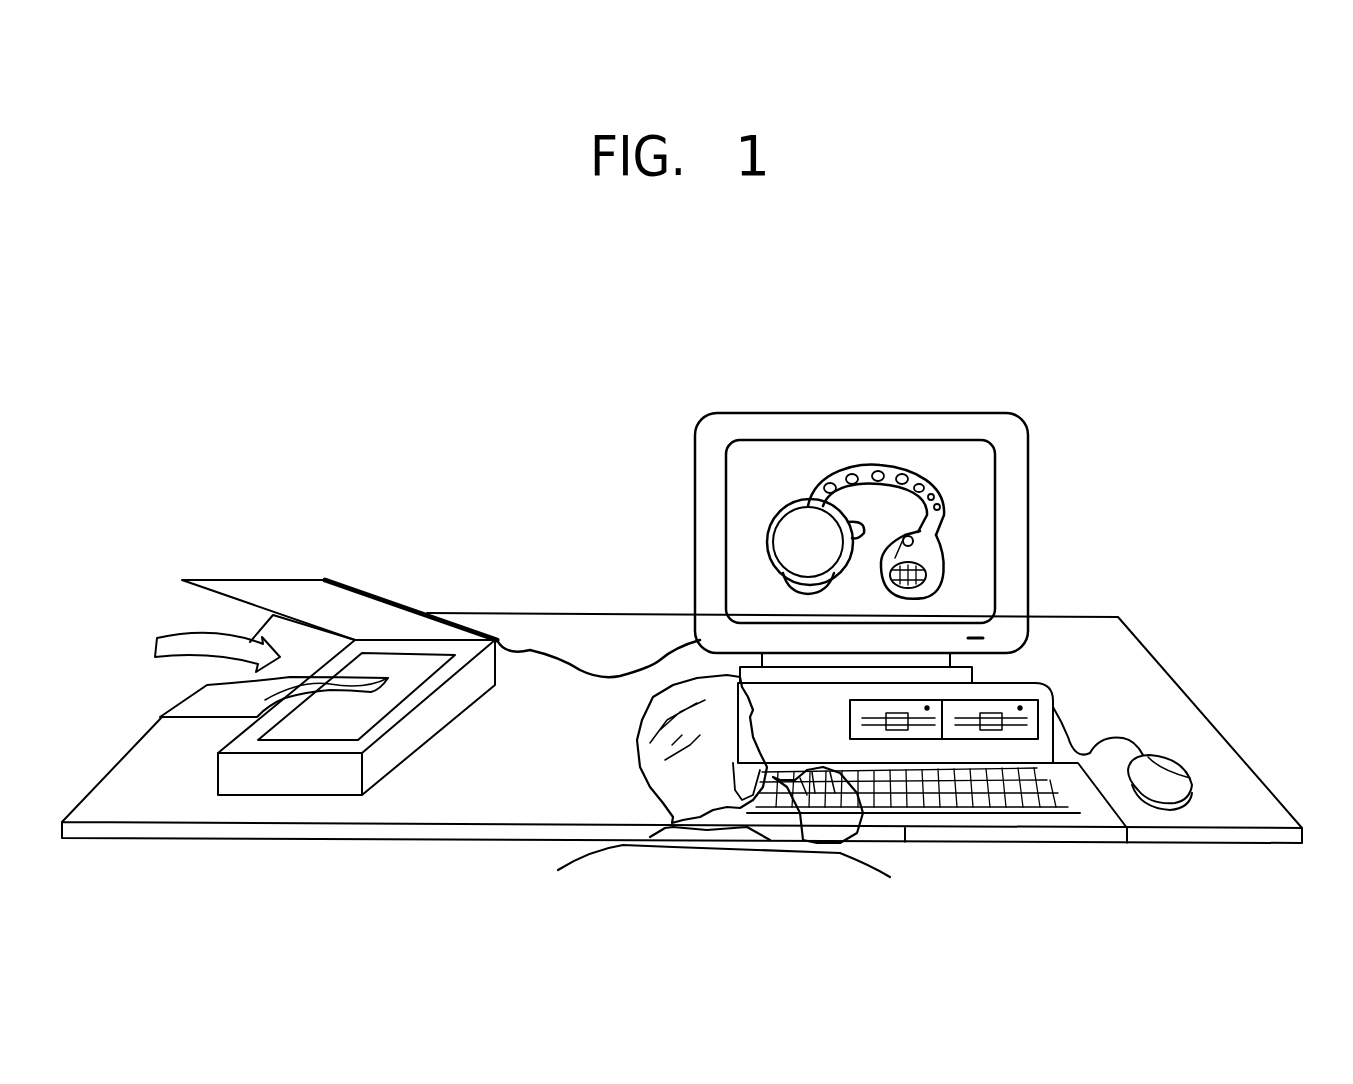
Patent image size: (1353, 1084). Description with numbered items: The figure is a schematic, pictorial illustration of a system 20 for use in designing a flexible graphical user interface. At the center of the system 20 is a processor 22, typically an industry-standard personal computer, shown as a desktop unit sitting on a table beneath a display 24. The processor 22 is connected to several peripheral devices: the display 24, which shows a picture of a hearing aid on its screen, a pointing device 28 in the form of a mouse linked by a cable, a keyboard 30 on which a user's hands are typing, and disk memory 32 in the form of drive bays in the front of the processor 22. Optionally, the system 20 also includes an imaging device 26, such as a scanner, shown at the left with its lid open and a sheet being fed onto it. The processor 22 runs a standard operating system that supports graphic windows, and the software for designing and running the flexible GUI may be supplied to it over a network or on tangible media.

The system 20 is at (1230, 320).
The processor 22 is at (956, 705).
The display 24 is at (1000, 415).
The imaging device 26 is at (362, 595).
The pointing device 28 is at (1177, 780).
The keyboard 30 is at (978, 790).
The disk memory 32 is at (1017, 732).